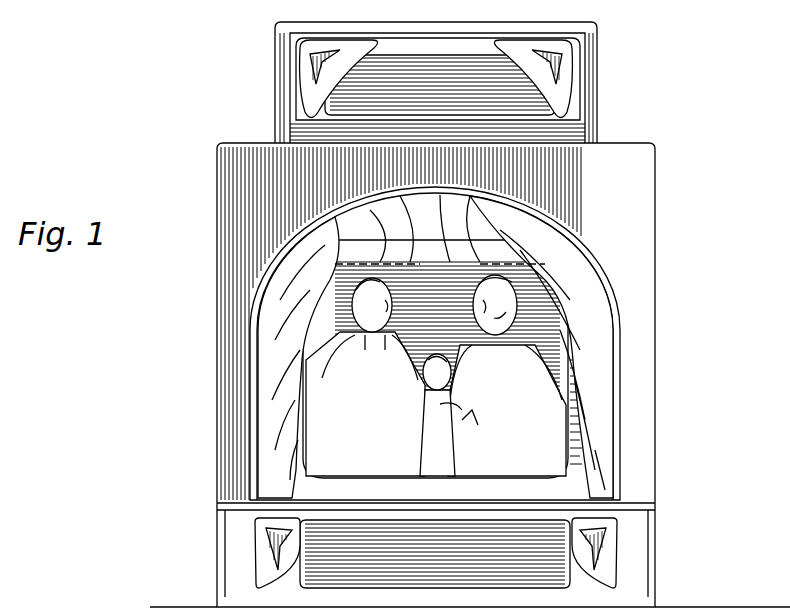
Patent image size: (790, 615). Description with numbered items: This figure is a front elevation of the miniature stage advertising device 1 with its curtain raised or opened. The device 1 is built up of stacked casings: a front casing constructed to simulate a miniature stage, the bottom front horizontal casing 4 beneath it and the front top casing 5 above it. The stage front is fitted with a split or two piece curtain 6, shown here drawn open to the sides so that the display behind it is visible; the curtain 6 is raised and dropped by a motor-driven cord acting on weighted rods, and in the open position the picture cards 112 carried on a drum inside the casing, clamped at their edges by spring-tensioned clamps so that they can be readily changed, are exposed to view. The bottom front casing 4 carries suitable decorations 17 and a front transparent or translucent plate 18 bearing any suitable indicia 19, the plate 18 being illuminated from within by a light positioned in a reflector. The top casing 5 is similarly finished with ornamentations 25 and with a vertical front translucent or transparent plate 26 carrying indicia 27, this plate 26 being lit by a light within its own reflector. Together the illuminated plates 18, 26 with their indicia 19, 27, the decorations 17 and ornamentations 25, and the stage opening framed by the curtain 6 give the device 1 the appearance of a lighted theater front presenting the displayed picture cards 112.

The miniature stage advertising device 1 is at (215, 168).
The bottom front horizontal casing 4 is at (228, 549).
The front top casing 5 is at (275, 75).
The split curtain 6 is at (283, 275).
The decorations 17 is at (258, 533).
The front transparent plate 18 is at (395, 533).
The indicia 19 is at (490, 552).
The ornamentations 25 is at (305, 64).
The vertical front translucent plate 26 is at (542, 105).
The indicia 27 is at (540, 80).
The picture cards 112 is at (565, 355).